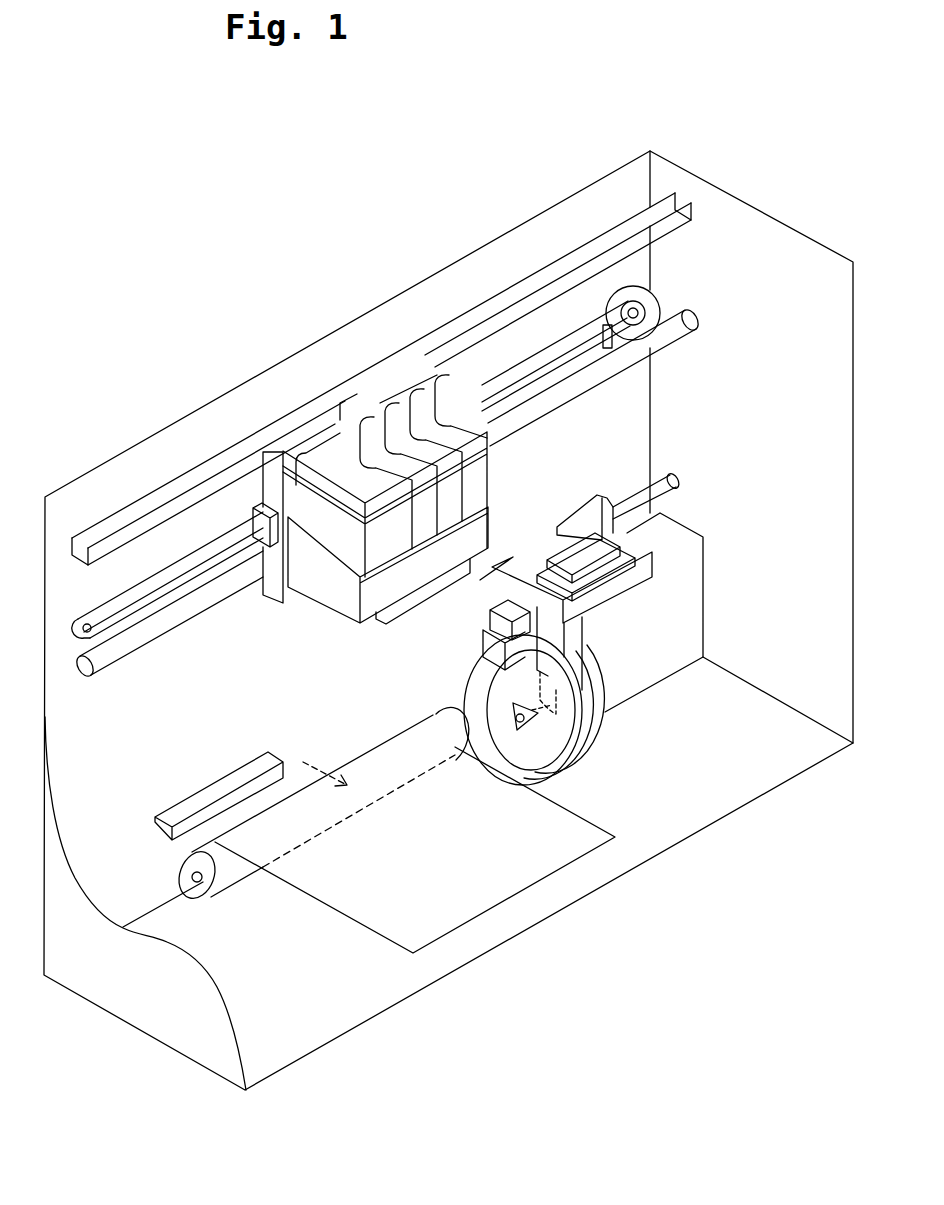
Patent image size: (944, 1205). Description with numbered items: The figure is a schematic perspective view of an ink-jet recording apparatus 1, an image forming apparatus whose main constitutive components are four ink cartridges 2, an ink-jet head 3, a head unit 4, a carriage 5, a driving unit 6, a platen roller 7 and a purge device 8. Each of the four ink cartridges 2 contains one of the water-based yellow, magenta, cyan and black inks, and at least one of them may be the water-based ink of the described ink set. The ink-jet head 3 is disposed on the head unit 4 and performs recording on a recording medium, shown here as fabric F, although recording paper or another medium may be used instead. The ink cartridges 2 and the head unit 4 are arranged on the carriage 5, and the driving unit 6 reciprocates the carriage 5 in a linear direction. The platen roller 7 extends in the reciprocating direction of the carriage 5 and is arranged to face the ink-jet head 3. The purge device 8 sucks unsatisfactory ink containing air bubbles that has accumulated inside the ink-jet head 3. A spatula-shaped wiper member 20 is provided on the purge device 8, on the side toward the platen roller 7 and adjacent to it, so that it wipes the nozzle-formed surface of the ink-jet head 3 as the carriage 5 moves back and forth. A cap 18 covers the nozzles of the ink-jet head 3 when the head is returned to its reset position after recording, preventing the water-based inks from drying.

The ink-jet recording apparatus 1 is at (339, 171).
The ink cartridges 2 is at (380, 400).
The ink-jet head 3 is at (437, 590).
The head unit 4 is at (421, 629).
The carriage 5 is at (273, 475).
The driving unit 6 is at (665, 172).
The platen roller 7 is at (233, 867).
The purge device 8 is at (755, 635).
The cap 18 is at (597, 550).
The wiper member 20 is at (508, 627).
The fabric F is at (400, 925).